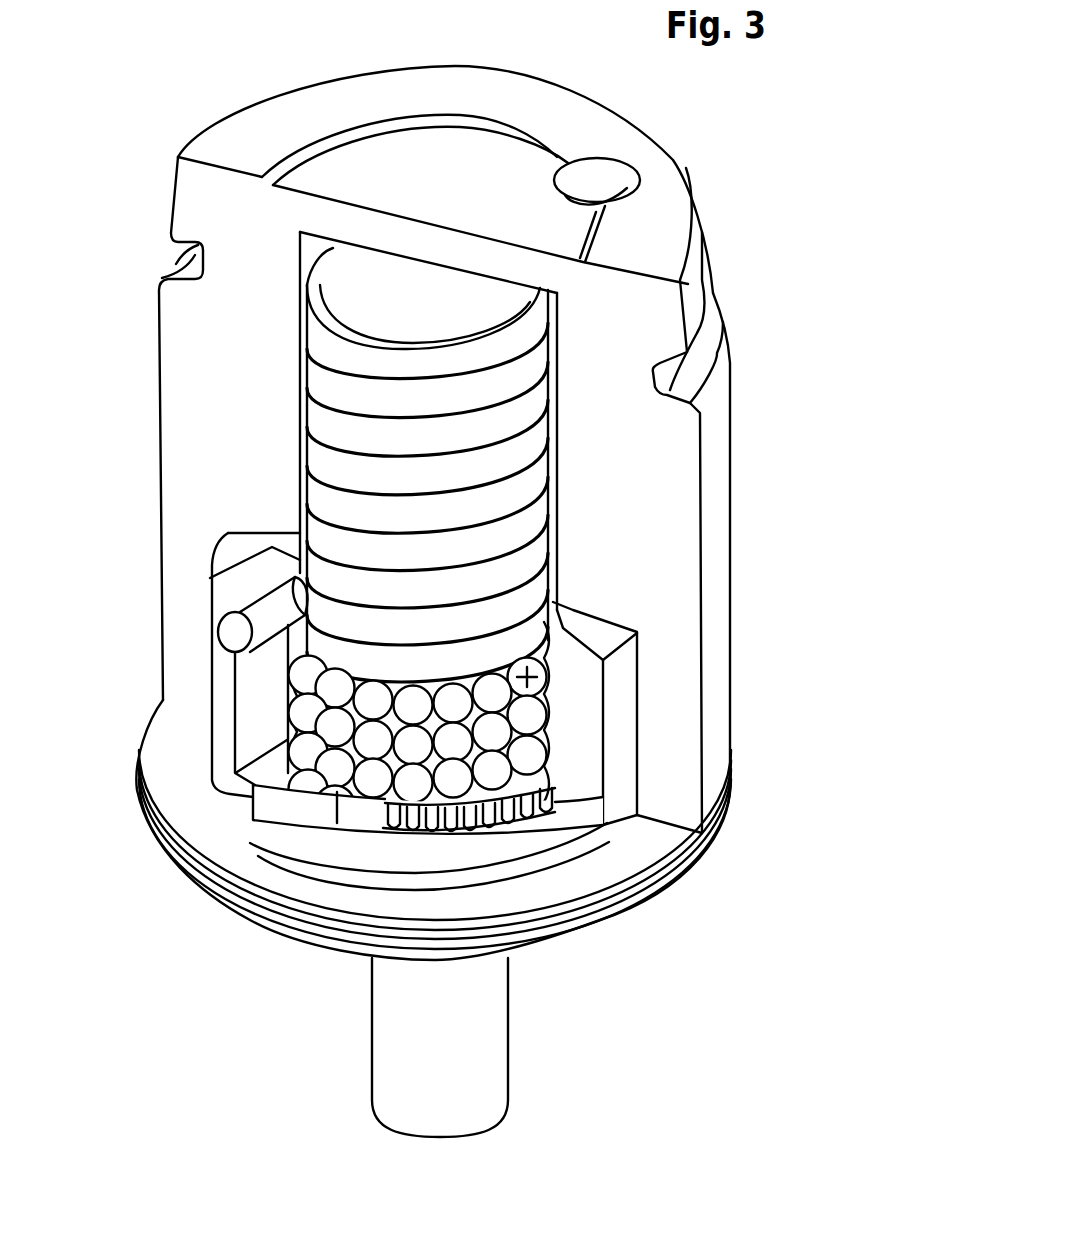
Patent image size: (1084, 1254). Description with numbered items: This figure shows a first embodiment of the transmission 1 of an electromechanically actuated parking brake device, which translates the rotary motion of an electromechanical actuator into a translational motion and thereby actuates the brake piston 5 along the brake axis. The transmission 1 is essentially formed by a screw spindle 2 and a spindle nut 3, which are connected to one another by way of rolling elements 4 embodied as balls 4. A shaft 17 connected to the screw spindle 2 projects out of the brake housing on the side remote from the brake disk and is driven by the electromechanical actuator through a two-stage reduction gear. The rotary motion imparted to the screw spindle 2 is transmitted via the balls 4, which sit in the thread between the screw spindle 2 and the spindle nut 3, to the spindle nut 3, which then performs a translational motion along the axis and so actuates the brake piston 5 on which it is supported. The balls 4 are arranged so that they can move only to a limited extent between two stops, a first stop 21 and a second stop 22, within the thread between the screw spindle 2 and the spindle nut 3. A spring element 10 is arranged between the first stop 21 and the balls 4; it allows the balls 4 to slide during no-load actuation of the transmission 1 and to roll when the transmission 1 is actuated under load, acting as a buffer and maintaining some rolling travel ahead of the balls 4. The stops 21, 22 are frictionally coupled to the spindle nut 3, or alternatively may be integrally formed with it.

The transmission 1 is at (290, 525).
The screw spindle 2 is at (380, 268).
The spindle nut 3 is at (623, 755).
The rolling elements 4 is at (540, 673).
The brake piston 5 is at (678, 443).
The spring element 10 is at (508, 813).
The shaft 17 is at (397, 1065).
The first stop 21 is at (293, 808).
The second stop 22 is at (267, 605).